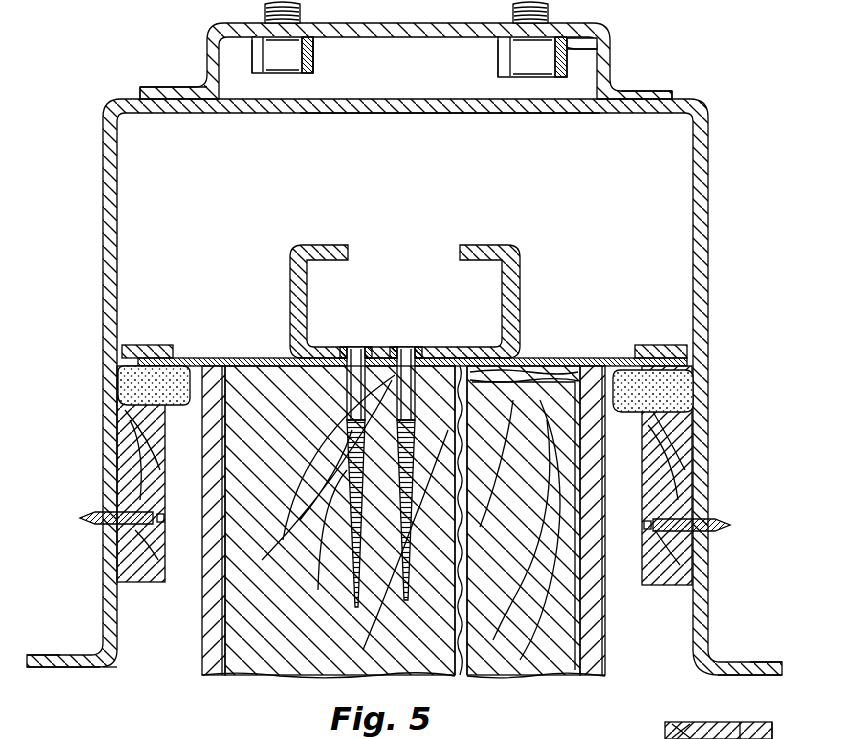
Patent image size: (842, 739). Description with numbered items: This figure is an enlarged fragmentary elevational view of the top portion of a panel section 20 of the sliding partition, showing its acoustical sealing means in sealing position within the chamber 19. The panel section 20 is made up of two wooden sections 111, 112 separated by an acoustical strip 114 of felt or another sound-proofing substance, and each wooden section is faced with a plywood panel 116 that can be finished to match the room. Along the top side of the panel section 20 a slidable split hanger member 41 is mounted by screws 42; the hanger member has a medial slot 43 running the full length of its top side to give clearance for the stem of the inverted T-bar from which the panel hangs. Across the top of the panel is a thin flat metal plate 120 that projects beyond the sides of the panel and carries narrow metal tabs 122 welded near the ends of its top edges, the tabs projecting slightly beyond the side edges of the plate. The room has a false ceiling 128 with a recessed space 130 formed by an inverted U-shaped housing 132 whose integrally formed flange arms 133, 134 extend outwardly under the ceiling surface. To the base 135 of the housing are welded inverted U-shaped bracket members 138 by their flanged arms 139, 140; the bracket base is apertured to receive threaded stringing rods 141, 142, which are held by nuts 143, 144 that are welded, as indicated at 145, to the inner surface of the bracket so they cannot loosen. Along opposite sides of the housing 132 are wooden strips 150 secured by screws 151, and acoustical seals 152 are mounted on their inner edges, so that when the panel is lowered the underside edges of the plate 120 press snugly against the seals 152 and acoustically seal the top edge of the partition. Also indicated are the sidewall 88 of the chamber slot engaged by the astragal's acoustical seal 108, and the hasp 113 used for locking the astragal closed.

The chamber 19 is at (733, 711).
The panel section 20 is at (405, 535).
The split hanger member 41 is at (522, 272).
The screws 42 is at (356, 347).
The medial slot 43 is at (390, 242).
The sidewall of slot 88 is at (750, 712).
The acoustical seal 108 is at (718, 712).
The wooden section 111 is at (280, 672).
The wooden section 112 is at (542, 675).
The hasp 113 is at (772, 730).
The acoustical strip 114 is at (462, 675).
The plywood panel 116 is at (212, 626).
The metal plate 120 is at (540, 358).
The metal tabs 122 is at (150, 345).
The false ceiling 128 is at (30, 655).
The recessed space 130 is at (145, 648).
The inverted U-shaped housing 132 is at (120, 232).
The flange arm 133 is at (48, 655).
The flange arm 134 is at (740, 662).
The base of housing 135 is at (400, 113).
The inverted U-shaped bracket member 138 is at (410, 25).
The flanged arm 139 is at (172, 90).
The flanged arm 140 is at (648, 90).
The stringing rod 141 is at (300, 18).
The stringing rod 142 is at (548, 18).
The nut 143 is at (300, 68).
The nut 144 is at (500, 72).
The weld 145 is at (257, 50).
The wooden strips 150 is at (142, 575).
The screws 151 is at (85, 510).
The acoustical seals 152 is at (140, 388).